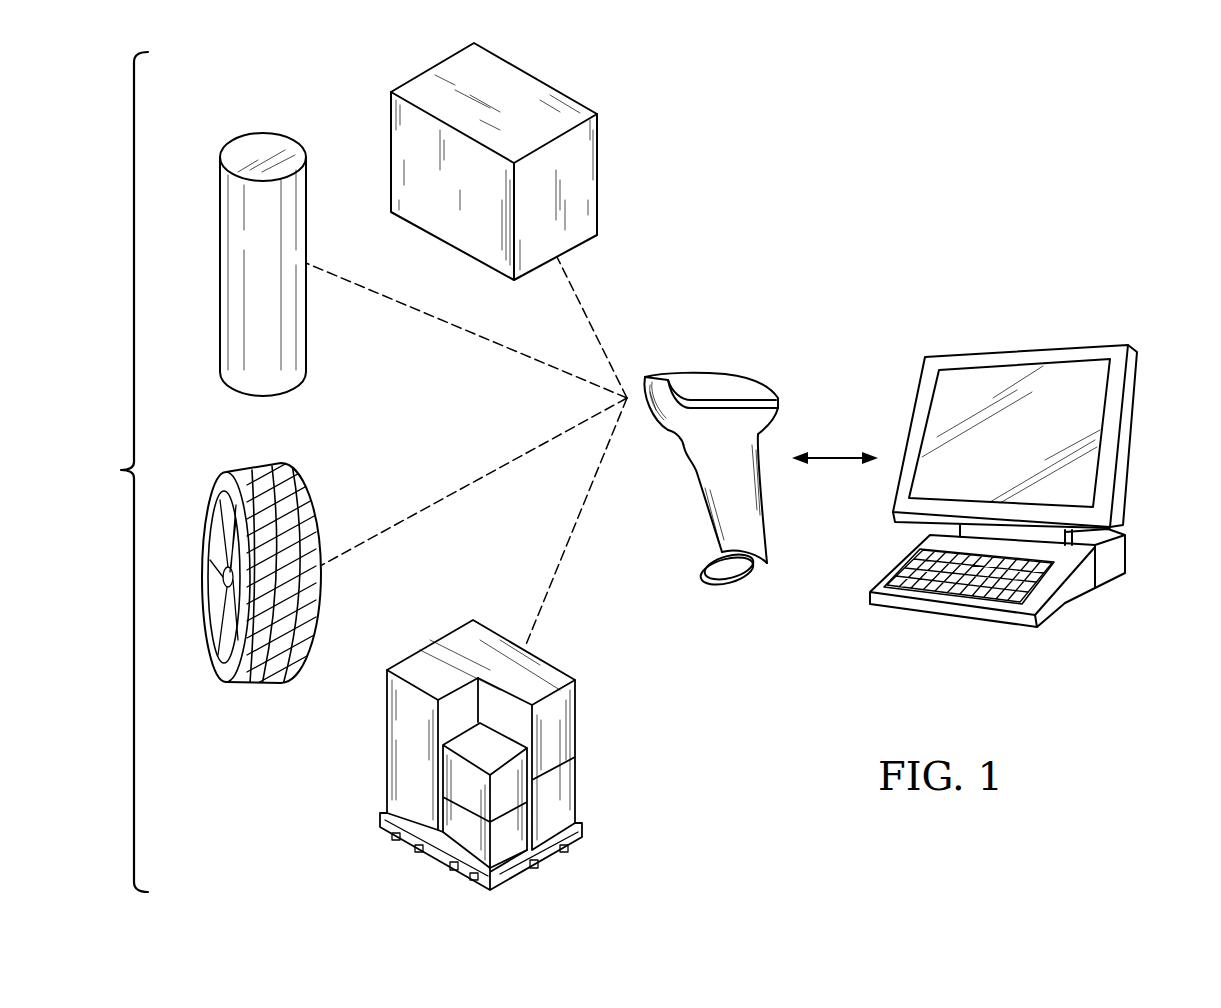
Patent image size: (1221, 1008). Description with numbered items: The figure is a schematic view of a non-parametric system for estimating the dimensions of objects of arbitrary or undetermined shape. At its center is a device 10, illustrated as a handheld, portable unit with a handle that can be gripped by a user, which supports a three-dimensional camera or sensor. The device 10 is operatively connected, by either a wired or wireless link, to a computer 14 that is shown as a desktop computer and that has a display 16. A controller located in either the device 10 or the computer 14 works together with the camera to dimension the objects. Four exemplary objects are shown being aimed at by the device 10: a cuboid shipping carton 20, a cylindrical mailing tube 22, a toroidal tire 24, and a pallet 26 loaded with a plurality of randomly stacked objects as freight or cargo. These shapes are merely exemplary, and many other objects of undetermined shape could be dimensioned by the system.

The device 10 is at (792, 380).
The computer 14 is at (1045, 458).
The display 16 is at (948, 408).
The cuboid shipping carton 20 is at (598, 172).
The cylindrical mailing tube 22 is at (306, 337).
The toroidal tire 24 is at (322, 613).
The pallet 26 is at (625, 765).